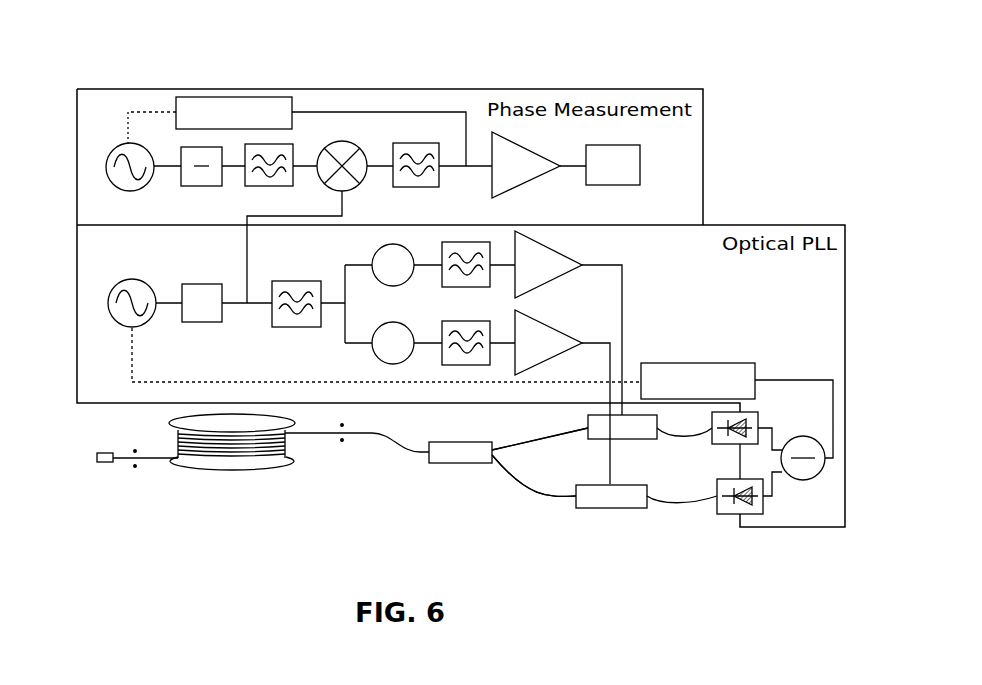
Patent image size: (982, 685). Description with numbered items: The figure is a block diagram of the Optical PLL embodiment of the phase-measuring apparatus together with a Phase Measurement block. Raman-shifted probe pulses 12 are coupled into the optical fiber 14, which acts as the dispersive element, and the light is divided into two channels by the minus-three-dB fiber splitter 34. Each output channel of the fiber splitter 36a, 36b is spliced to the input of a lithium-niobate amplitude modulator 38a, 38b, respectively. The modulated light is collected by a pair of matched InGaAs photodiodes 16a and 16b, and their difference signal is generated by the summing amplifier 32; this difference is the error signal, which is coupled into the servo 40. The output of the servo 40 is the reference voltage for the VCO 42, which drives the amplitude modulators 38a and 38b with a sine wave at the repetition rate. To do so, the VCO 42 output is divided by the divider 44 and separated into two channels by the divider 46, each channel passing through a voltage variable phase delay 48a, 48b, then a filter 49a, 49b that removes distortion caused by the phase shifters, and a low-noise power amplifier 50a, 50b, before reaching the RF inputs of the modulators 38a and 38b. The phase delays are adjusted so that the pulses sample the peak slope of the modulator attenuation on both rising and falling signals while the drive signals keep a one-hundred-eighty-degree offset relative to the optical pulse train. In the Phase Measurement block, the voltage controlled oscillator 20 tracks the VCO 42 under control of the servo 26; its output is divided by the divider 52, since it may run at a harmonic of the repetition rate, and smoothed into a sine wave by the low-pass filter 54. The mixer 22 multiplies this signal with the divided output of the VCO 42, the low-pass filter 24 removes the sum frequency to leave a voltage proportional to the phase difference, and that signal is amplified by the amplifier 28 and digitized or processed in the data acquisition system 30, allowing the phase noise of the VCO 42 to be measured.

The Raman-shifted probe pulses 12 is at (102, 451).
The optical fiber 14 is at (236, 472).
The InGaAs photodiode 16a is at (761, 411).
The InGaAs photodiode 16b is at (779, 530).
The voltage controlled oscillator 20 is at (108, 158).
The mixer 22 is at (359, 143).
The low-pass filter 24 is at (415, 189).
The servo 26 is at (229, 96).
The amplifier 28 is at (518, 193).
The data acquisition system 30 is at (645, 160).
The summing amplifier 32 is at (817, 477).
The fiber splitter 34 is at (459, 466).
The output channel of the fiber splitter 36a is at (548, 438).
The output channel of the fiber splitter 36b is at (536, 490).
The amplitude modulator 38a is at (639, 442).
The amplitude modulator 38b is at (606, 511).
The servo 40 is at (706, 361).
The VCO 42 is at (107, 310).
The divider 44 is at (191, 281).
The divider 46 is at (289, 279).
The voltage variable phase delay 48a is at (406, 245).
The voltage variable phase delay 48b is at (375, 350).
The filter 49a is at (466, 241).
The filter 49b is at (456, 320).
The low-noise power amplifier 50a is at (549, 250).
The low-noise power amplifier 50b is at (541, 325).
The divider 52 is at (200, 188).
The low-pass filter 54 is at (262, 188).